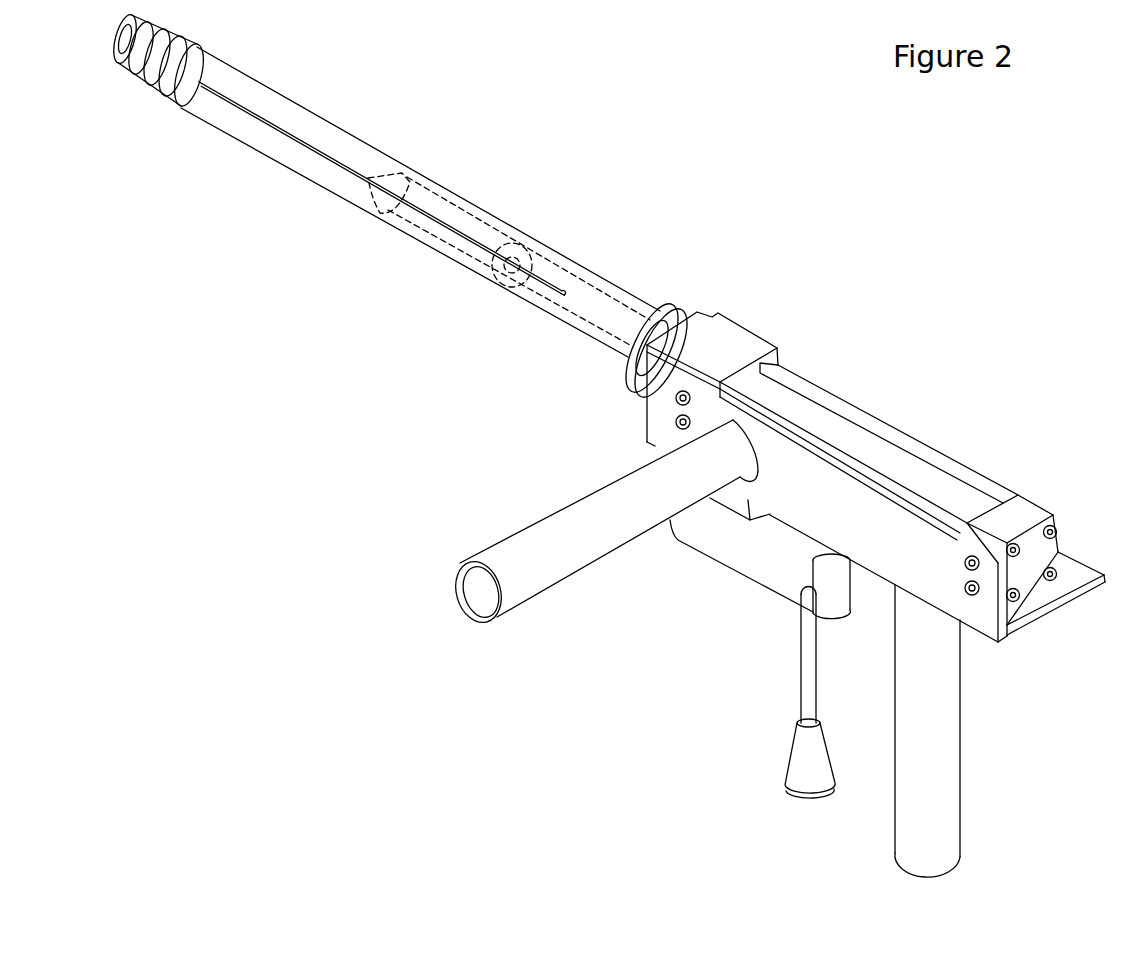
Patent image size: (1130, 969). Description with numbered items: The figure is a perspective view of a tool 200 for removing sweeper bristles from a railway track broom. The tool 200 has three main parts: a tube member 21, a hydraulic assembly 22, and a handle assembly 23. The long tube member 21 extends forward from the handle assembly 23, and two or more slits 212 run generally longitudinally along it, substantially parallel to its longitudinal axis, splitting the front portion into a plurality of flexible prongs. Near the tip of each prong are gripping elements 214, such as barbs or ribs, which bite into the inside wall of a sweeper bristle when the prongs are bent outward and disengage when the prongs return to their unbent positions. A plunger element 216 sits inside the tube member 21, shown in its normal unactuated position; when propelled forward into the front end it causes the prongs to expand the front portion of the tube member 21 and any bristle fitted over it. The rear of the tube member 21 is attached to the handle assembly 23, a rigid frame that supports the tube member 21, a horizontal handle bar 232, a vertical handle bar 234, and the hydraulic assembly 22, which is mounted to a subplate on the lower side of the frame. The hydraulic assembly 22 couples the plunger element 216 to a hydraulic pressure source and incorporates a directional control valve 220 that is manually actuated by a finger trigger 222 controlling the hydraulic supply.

The tool 200 is at (873, 202).
The tube member 21 is at (304, 284).
The slits 212 is at (285, 146).
The gripping elements 214 is at (142, 96).
The plunger element 216 is at (478, 212).
The hydraulic assembly 22 is at (727, 604).
The directional control valve 220 is at (760, 558).
The finger trigger 222 is at (780, 763).
The handle assembly 23 is at (930, 400).
The horizontal handle bar 232 is at (516, 614).
The vertical handle bar 234 is at (905, 847).